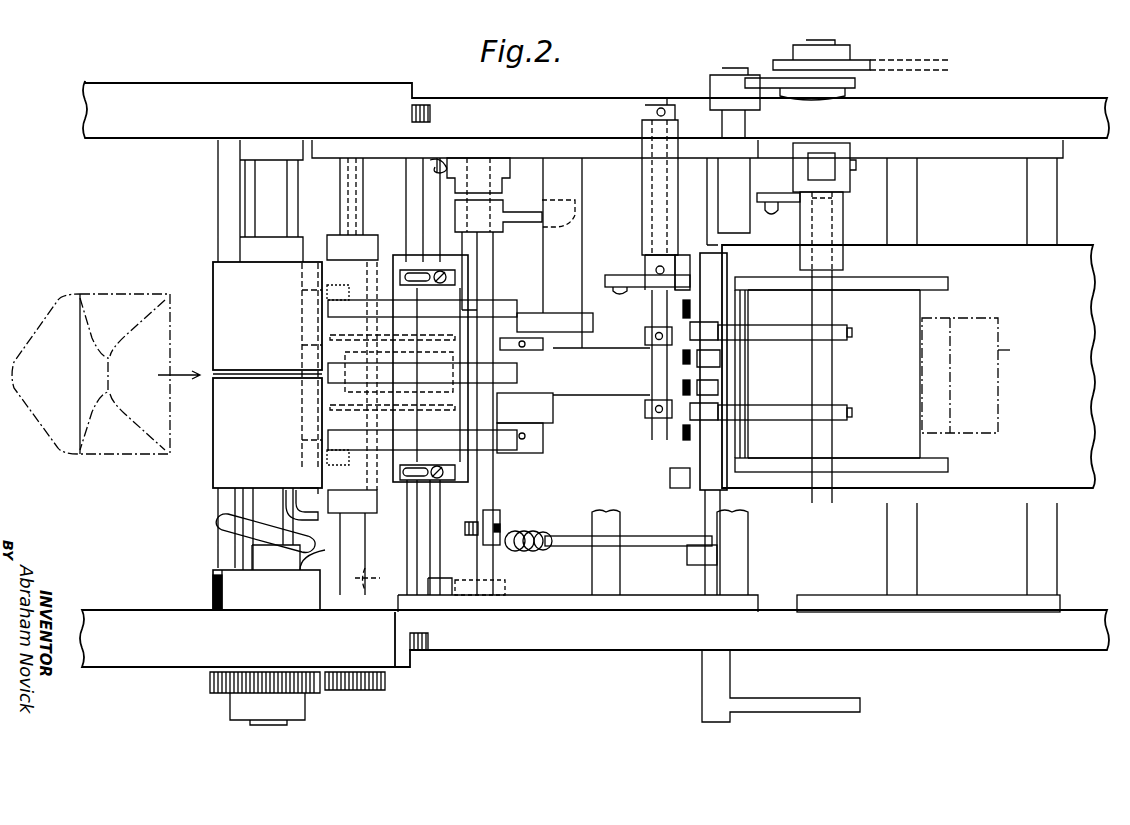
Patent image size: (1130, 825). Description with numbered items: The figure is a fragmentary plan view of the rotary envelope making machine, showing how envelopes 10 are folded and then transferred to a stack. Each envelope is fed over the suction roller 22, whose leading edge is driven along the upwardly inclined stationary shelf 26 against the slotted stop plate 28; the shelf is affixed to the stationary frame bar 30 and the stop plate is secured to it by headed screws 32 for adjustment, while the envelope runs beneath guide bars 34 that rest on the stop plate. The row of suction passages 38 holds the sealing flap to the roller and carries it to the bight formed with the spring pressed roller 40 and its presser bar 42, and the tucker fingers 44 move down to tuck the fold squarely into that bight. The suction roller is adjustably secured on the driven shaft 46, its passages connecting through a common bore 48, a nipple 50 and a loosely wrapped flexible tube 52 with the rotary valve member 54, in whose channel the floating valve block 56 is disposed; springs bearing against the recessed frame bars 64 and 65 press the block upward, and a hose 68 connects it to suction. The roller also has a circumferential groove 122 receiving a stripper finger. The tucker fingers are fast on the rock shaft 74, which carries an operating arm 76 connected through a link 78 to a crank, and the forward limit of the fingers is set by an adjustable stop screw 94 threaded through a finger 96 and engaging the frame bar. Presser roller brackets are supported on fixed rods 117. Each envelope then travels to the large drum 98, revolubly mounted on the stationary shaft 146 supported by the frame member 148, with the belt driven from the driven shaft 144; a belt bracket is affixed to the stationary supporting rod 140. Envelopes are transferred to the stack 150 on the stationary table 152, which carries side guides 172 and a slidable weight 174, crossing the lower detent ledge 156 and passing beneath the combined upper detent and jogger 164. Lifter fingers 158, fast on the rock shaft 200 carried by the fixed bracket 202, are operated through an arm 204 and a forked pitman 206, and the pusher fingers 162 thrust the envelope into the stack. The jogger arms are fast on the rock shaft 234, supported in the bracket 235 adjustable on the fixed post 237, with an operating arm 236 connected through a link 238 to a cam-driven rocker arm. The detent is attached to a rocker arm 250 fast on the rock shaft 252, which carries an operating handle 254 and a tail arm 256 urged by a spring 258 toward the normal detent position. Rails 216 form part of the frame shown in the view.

The envelopes 10 is at (48, 332).
The suction roller 22 is at (213, 278).
The stationary shelf 26 is at (362, 542).
The stationary stop plate 28 is at (403, 255).
The stationary frame bar 30 is at (408, 544).
The headed screws 32 is at (441, 270).
The guide bars 34 is at (425, 335).
The suction passages 38 is at (320, 345).
The spring pressed roller 40 is at (330, 292).
The presser bar 42 is at (380, 439).
The tucker fingers 44 is at (330, 305).
The driven shaft 46 is at (280, 178).
The common bore 48 is at (302, 387).
The nipple 50 is at (306, 492).
The flexible tube 52 is at (222, 522).
The rotary valve member 54 is at (252, 606).
The floating valve block 56 is at (213, 598).
The recessed frame bar 64 is at (222, 545).
The recessed frame bar 65 is at (325, 551).
The hose 68 is at (372, 580).
The rock shaft 74 is at (494, 270).
The operating arm 76 is at (512, 200).
The link 78 is at (520, 222).
The adjustable stop screw 94 is at (471, 519).
The finger 96 is at (500, 514).
The drum 98 is at (602, 393).
The fixed rods 117 is at (448, 160).
The circumferential groove 122 is at (249, 376).
The stationary supporting rod 140 is at (600, 584).
The driven shaft 144 is at (828, 45).
The stationary shaft 146 is at (546, 374).
The frame member 148 is at (524, 313).
The stack 150 is at (934, 314).
The stationary table 152 is at (968, 248).
The lower detent ledge 156 is at (727, 265).
The lifter fingers 158 is at (676, 325).
The pusher fingers 162 is at (683, 388).
The combined upper detent and jogger 164 is at (779, 321).
The side guides 172 is at (865, 278).
The slidable weight 174 is at (998, 360).
The rock shaft 200 is at (652, 385).
The fixed bracket 202 is at (644, 205).
The arm 204 is at (622, 280).
The forked pitman 206 is at (634, 290).
The rails 216 is at (596, 150).
The rock shaft 234 is at (833, 438).
The bracket 235 is at (840, 213).
The operating arm 236 is at (776, 193).
The fixed post 237 is at (818, 167).
The link 238 is at (771, 209).
The rocker arm 250 is at (679, 258).
The rock shaft 252 is at (705, 510).
The operating handle 254 is at (798, 706).
The tail arm 256 is at (655, 546).
The spring 258 is at (532, 533).